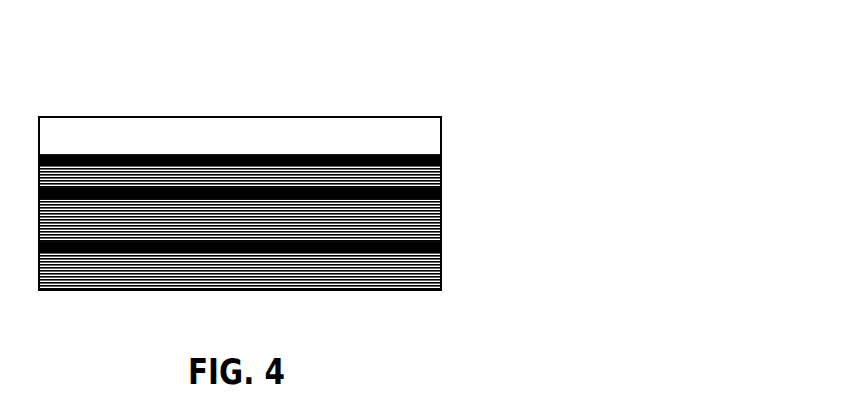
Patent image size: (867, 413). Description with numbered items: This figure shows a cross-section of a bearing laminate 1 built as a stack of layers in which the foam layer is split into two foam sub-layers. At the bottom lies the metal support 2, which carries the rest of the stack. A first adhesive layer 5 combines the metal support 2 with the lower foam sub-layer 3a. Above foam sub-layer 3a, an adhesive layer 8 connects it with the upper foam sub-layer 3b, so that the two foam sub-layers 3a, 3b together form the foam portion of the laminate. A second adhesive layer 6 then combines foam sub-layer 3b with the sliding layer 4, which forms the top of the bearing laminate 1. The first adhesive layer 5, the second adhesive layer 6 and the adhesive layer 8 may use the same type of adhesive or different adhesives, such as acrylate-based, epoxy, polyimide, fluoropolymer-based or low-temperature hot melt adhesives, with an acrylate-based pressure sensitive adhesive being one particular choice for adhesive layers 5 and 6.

The bearing laminate 1 is at (482, 68).
The metal support layer 2 is at (443, 287).
The foam sub-layer 3a is at (430, 230).
The foam sub-layer 3b is at (441, 175).
The sliding layer 4 is at (427, 134).
The first adhesive layer 5 is at (443, 250).
The second adhesive layer 6 is at (441, 160).
The adhesive layer 8 is at (441, 197).